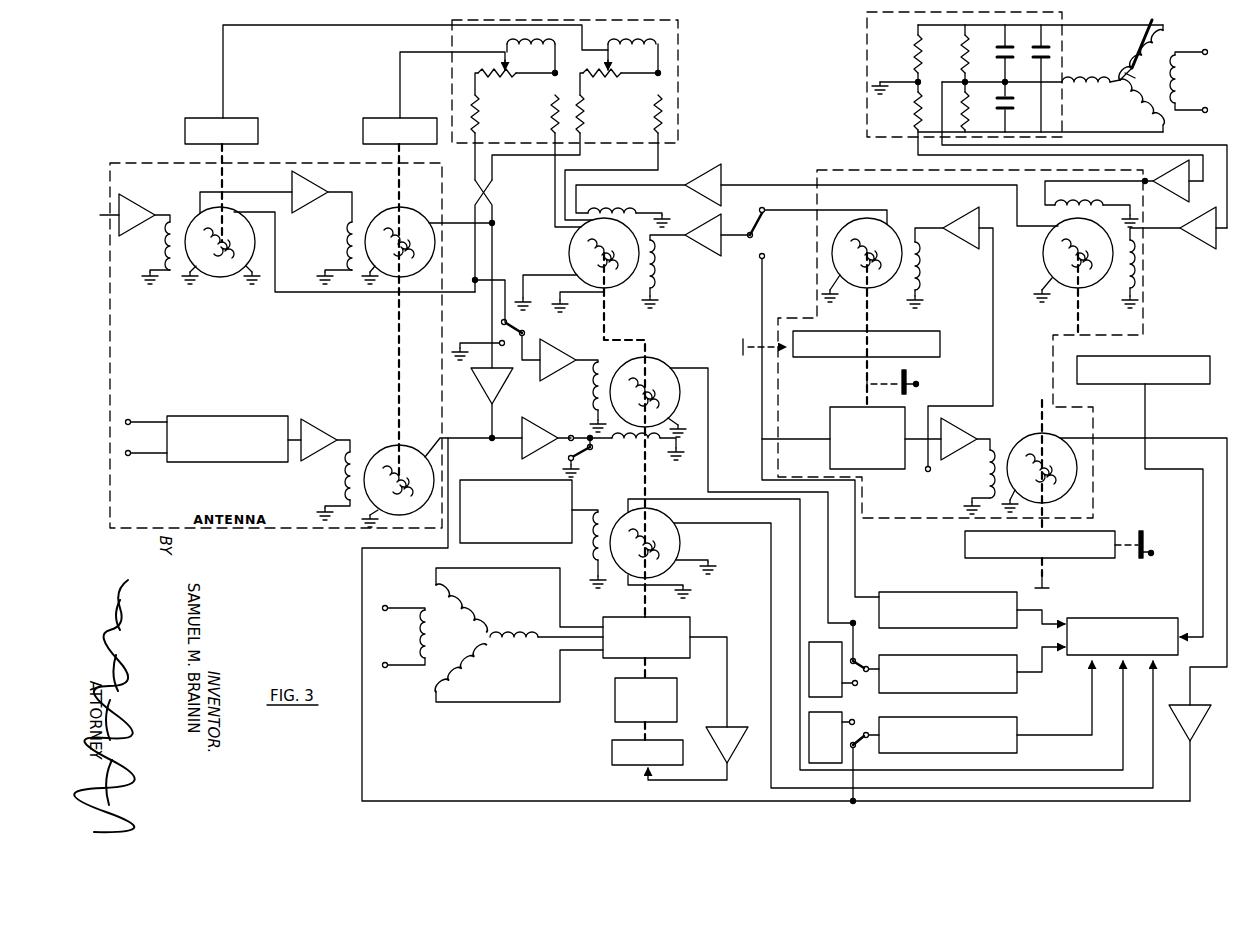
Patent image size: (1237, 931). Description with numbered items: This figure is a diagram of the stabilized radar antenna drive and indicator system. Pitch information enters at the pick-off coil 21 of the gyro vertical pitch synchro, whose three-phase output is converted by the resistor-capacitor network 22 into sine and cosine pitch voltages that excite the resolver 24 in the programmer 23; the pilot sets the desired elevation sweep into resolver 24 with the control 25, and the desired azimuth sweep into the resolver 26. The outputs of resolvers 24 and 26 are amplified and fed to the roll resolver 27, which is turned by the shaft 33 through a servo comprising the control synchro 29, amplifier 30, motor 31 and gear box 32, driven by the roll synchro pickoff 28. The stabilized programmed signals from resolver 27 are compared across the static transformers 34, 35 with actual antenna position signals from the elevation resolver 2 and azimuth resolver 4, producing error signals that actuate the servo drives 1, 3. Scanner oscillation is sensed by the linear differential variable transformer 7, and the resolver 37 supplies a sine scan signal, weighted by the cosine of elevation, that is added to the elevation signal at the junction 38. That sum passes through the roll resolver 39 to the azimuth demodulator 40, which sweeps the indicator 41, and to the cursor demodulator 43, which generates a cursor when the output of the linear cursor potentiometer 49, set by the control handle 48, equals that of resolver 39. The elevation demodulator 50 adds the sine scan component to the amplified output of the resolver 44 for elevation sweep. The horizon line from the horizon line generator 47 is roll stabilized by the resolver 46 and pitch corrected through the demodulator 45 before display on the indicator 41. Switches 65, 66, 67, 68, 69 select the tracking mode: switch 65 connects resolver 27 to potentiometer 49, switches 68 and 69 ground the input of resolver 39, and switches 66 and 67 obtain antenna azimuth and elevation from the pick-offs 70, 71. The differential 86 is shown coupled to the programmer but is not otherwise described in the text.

The servo drive 1 is at (378, 118).
The elevation resolver 2 is at (363, 212).
The servo drive 3 is at (248, 118).
The azimuth resolver 4 is at (192, 212).
The linear differential variable transformer 7 is at (275, 416).
The pick-off coil 21 is at (1112, 62).
The network 22 is at (868, 40).
The programmer 23 is at (845, 170).
The resolver 24 is at (1041, 243).
The control 25 is at (1145, 532).
The resolver 26 is at (896, 220).
The roll resolver 27 is at (662, 248).
The roll synchro pickoff 28 is at (490, 628).
The control synchro 29 is at (612, 658).
The amplifier 30 is at (737, 735).
The motor 31 is at (612, 752).
The gear box 32 is at (615, 700).
The shaft 33 is at (645, 595).
The static transformer 34 is at (540, 80).
The static transformer 35 is at (645, 80).
The resolver 37 is at (366, 448).
The junction 38 is at (488, 436).
The roll resolver 39 is at (670, 352).
The azimuth demodulator 40 is at (1010, 680).
The indicator 41 is at (1125, 618).
The cursor demodulator 43 is at (1007, 613).
The resolver 44 is at (1013, 428).
The demodulator 45 is at (1192, 356).
The resolver 46 is at (616, 519).
The horizon line generator 47 is at (468, 480).
The control handle 48 is at (910, 384).
The linear cursor potentiometer 49 is at (838, 407).
The elevation demodulator 50 is at (1010, 745).
The switch 65 is at (753, 244).
The switch 66 is at (860, 660).
The switch 67 is at (857, 748).
The switch 68 is at (593, 452).
The switch 69 is at (500, 335).
The pick-off 70 is at (817, 679).
The pick-off 71 is at (817, 747).
The differential 86 is at (925, 332).